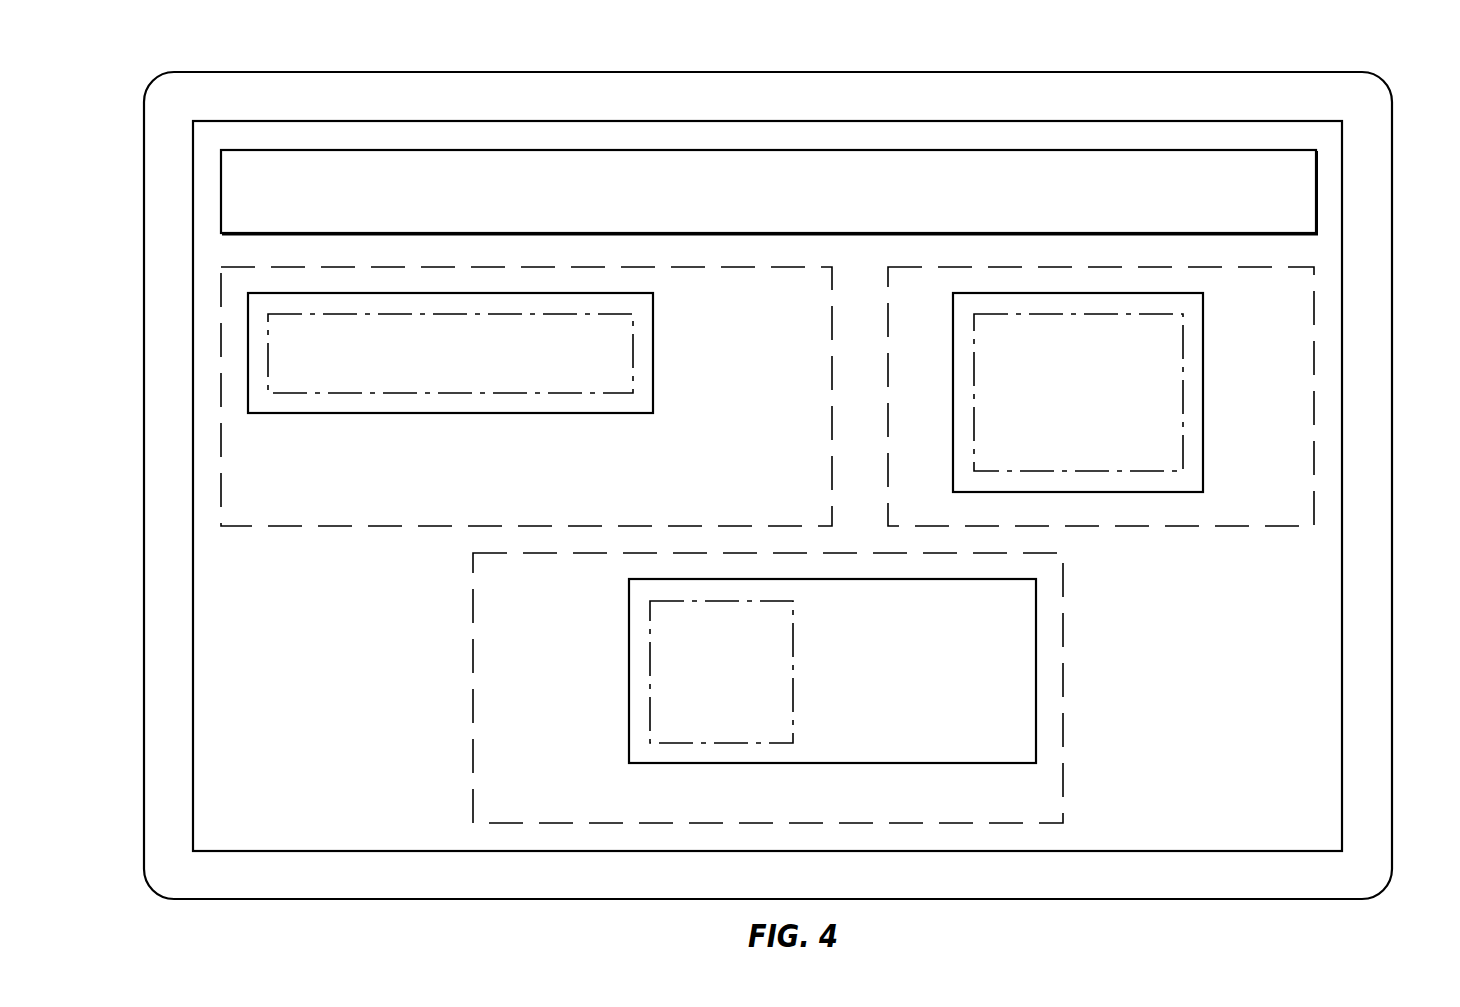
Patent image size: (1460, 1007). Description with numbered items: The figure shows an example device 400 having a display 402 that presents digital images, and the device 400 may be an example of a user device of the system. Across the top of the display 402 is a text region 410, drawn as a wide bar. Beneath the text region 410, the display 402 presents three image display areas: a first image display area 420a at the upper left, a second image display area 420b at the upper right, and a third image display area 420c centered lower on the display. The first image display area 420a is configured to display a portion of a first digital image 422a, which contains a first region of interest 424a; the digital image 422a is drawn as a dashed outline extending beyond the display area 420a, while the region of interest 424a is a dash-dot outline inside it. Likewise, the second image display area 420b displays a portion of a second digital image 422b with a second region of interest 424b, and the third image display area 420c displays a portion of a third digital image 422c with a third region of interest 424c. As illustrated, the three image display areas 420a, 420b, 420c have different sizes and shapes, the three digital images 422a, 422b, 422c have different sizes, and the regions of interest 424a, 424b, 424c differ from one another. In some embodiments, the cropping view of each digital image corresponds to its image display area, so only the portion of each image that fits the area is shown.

The device 400 is at (1328, 72).
The display 402 is at (1188, 121).
The text region 410 is at (783, 203).
The first digital image 422a is at (221, 287).
The first image display area 420a is at (248, 388).
The first region of interest 424a is at (268, 335).
The second digital image 422b is at (1314, 287).
The second image display area 420b is at (1203, 435).
The second region of interest 424b is at (1183, 386).
The third digital image 422c is at (642, 823).
The third image display area 420c is at (988, 763).
The third region of interest 424c is at (733, 743).